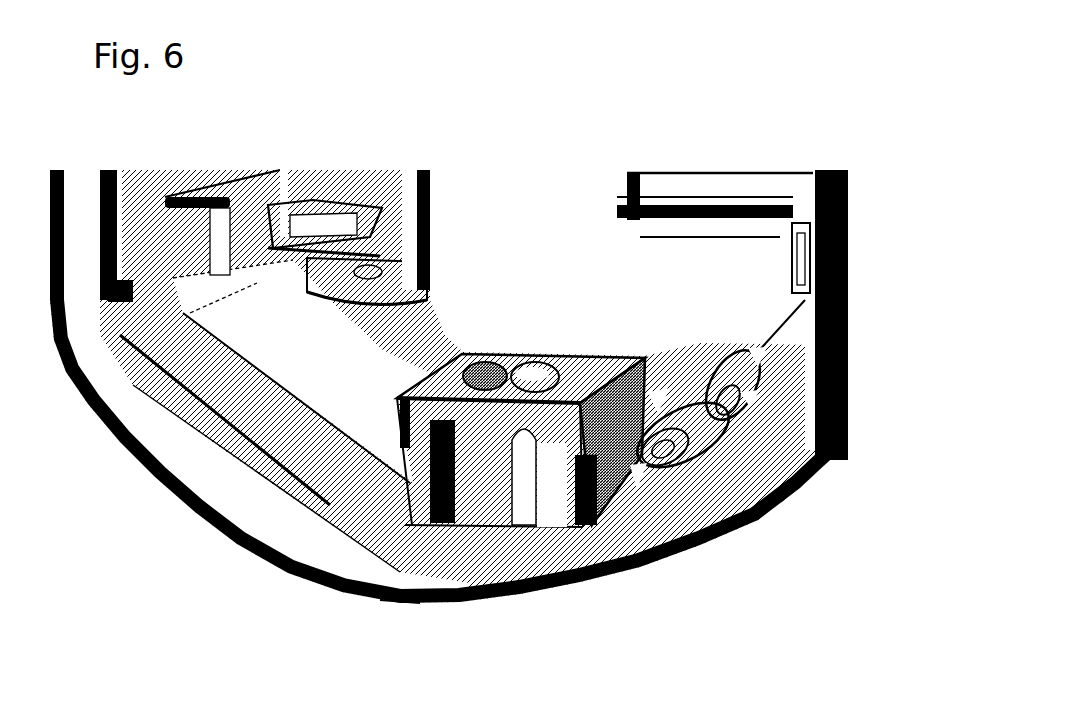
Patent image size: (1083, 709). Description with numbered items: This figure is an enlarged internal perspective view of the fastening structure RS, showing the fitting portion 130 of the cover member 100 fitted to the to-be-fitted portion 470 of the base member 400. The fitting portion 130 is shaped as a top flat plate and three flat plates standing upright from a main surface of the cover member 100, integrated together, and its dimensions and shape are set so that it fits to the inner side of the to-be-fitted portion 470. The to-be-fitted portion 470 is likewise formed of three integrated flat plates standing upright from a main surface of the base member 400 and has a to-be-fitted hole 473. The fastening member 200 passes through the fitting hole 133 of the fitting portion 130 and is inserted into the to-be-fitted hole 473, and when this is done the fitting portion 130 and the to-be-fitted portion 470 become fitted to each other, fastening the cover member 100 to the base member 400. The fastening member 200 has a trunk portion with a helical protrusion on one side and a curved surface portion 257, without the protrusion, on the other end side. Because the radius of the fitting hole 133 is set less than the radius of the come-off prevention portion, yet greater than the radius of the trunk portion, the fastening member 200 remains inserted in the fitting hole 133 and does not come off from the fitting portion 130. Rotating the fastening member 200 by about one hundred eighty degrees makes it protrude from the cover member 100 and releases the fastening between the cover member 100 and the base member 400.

The cover member 100 is at (83, 205).
The base member 400 is at (155, 197).
The fastening member 200 is at (487, 362).
The to-be-fitted hole 473 is at (558, 378).
The curved surface portion 257 is at (463, 428).
The fitting portion 130 is at (492, 493).
The fitting hole 133 is at (517, 427).
The to-be-fitted portion 470 is at (610, 460).
The fastening structure RS is at (398, 605).